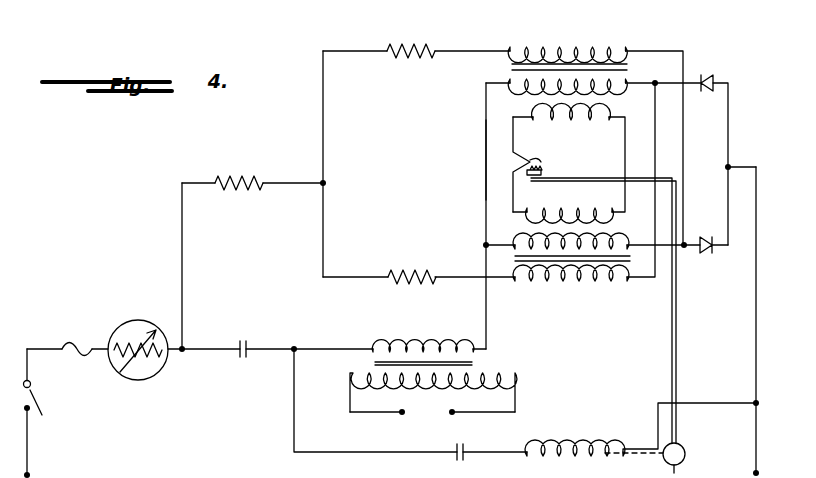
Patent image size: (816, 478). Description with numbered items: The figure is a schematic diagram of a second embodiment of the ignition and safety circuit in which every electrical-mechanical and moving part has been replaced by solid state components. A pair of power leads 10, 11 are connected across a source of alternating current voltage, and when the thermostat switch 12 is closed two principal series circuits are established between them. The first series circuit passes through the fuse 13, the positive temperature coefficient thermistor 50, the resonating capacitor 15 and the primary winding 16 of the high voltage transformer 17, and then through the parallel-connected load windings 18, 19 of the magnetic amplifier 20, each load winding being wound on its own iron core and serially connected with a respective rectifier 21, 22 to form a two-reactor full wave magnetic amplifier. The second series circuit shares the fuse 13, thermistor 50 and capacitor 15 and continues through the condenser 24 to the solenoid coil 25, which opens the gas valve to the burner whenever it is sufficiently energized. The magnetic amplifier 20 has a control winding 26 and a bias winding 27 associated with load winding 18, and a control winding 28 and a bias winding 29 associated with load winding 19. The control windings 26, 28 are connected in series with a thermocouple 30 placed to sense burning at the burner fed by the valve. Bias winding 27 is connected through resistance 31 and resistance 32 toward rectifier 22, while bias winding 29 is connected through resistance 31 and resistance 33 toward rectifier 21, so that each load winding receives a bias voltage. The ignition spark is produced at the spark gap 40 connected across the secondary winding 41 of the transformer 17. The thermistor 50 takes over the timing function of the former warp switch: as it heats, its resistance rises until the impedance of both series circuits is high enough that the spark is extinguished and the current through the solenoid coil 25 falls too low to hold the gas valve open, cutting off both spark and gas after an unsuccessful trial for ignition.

The power lead 10 is at (29, 446).
The power lead 11 is at (756, 355).
The thermostat switch 12 is at (40, 406).
The fuse 13 is at (78, 347).
The resonating capacitor 15 is at (240, 342).
The primary winding 16 is at (441, 345).
The high voltage transformer 17 is at (488, 367).
The load winding 18 is at (612, 83).
The load winding 19 is at (614, 240).
The magnetic amplifier 20 is at (474, 162).
The rectifier 21 is at (708, 75).
The rectifier 22 is at (707, 253).
The condenser 24 is at (456, 455).
The solenoid coil 25 is at (618, 443).
The control winding 26 is at (582, 110).
The bias winding 27 is at (616, 50).
The control winding 28 is at (586, 211).
The bias winding 29 is at (594, 282).
The thermocouple 30 is at (540, 163).
The resistance 31 is at (242, 178).
The resistance 32 is at (411, 55).
The resistance 33 is at (411, 270).
The spark gap 40 is at (416, 413).
The secondary winding 41 is at (517, 375).
The positive temperature coefficient thermistor 50 is at (146, 323).